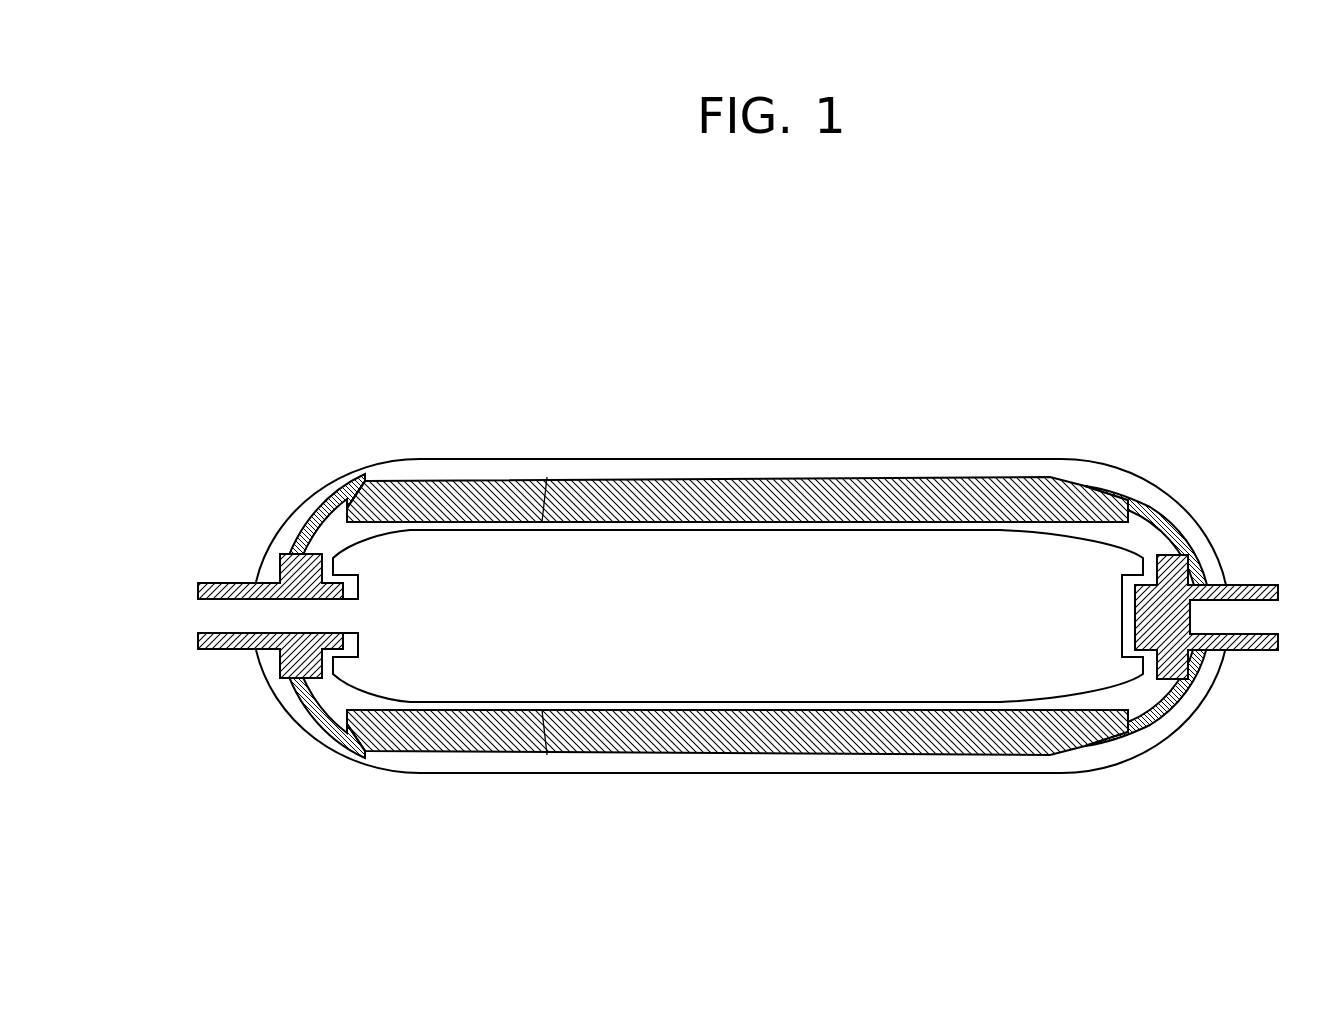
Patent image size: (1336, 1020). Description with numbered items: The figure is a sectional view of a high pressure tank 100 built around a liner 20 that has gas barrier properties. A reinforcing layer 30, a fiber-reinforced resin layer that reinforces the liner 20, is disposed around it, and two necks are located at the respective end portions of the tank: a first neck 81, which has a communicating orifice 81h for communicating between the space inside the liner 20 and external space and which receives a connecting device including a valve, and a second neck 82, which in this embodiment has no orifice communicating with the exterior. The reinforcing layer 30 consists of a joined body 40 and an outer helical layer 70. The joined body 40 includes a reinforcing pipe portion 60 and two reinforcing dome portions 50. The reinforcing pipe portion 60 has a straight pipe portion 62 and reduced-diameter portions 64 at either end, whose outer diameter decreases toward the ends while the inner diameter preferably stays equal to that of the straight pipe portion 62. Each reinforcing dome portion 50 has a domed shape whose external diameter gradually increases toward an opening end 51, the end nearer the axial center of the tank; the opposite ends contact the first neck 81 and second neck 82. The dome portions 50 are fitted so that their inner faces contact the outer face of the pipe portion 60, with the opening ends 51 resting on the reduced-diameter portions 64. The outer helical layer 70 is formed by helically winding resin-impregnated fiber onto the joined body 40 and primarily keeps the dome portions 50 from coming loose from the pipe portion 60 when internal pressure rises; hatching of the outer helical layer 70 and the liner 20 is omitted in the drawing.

The high pressure tank 100 is at (1203, 299).
The liner 20 is at (690, 524).
The reinforcing layer 30 is at (548, 297).
The joined body 40 is at (462, 367).
The reinforcing dome portion 50 is at (322, 510).
The opening end 51 is at (408, 522).
The reinforcing pipe portion 60 is at (514, 477).
The straight pipe portion 62 is at (545, 522).
The reduced-diameter portion 64 is at (408, 528).
The outer helical layer 70 is at (612, 470).
The first neck 81 is at (227, 649).
The communicating orifice 81h is at (207, 618).
The second neck 82 is at (1235, 650).